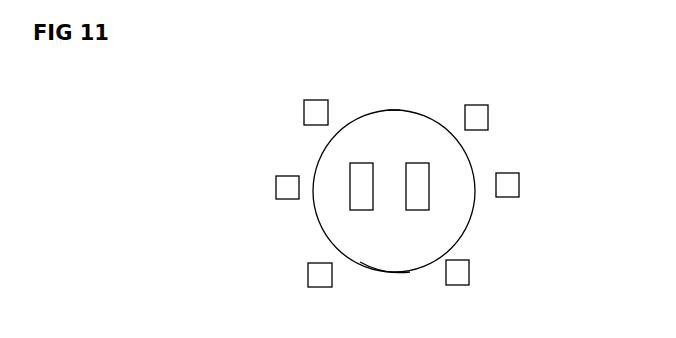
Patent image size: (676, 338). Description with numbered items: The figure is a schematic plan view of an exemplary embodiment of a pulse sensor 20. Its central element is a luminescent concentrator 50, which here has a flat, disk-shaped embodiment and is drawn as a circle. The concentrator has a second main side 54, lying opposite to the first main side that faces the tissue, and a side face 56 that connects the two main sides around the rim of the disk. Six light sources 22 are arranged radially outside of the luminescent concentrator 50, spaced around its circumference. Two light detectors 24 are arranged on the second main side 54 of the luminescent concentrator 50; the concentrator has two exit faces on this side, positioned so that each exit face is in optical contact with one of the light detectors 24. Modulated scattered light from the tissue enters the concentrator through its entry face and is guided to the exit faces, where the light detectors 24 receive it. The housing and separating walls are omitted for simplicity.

The pulse sensor 20 is at (218, 135).
The light sources 22 is at (304, 110).
The light detectors 24 is at (362, 211).
The luminescent concentrator 50 is at (378, 110).
The second main side 54 is at (383, 260).
The side face 56 is at (425, 112).